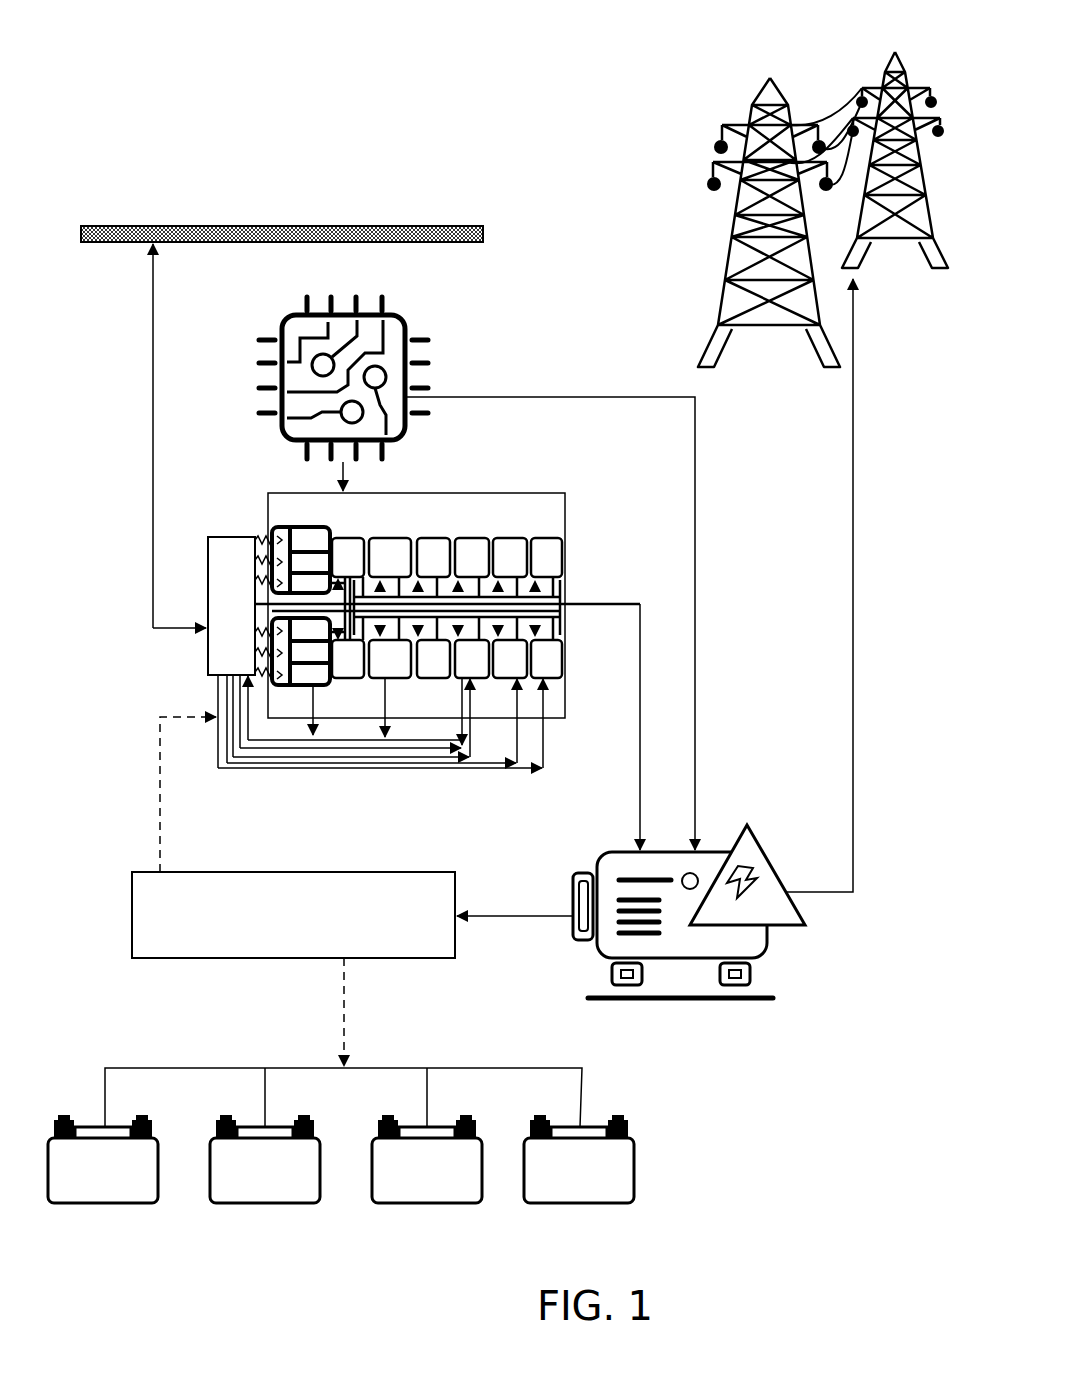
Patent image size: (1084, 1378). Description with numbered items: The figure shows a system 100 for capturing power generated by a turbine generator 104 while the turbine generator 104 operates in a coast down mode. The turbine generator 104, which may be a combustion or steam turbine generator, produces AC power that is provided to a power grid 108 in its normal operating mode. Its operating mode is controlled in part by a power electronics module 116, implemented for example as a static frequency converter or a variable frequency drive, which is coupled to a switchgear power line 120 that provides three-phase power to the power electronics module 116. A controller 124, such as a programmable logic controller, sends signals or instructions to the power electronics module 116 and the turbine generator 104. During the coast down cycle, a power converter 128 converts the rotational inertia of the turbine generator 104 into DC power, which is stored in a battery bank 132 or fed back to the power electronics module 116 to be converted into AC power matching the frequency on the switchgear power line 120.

The system 100 is at (270, 108).
The turbine generator 104 is at (768, 940).
The power grid 108 is at (768, 100).
The power electronics module 116 is at (510, 538).
The switchgear power line 120 is at (348, 232).
The controller 124 is at (406, 322).
The power converter 128 is at (293, 915).
The battery bank 132 is at (638, 1165).